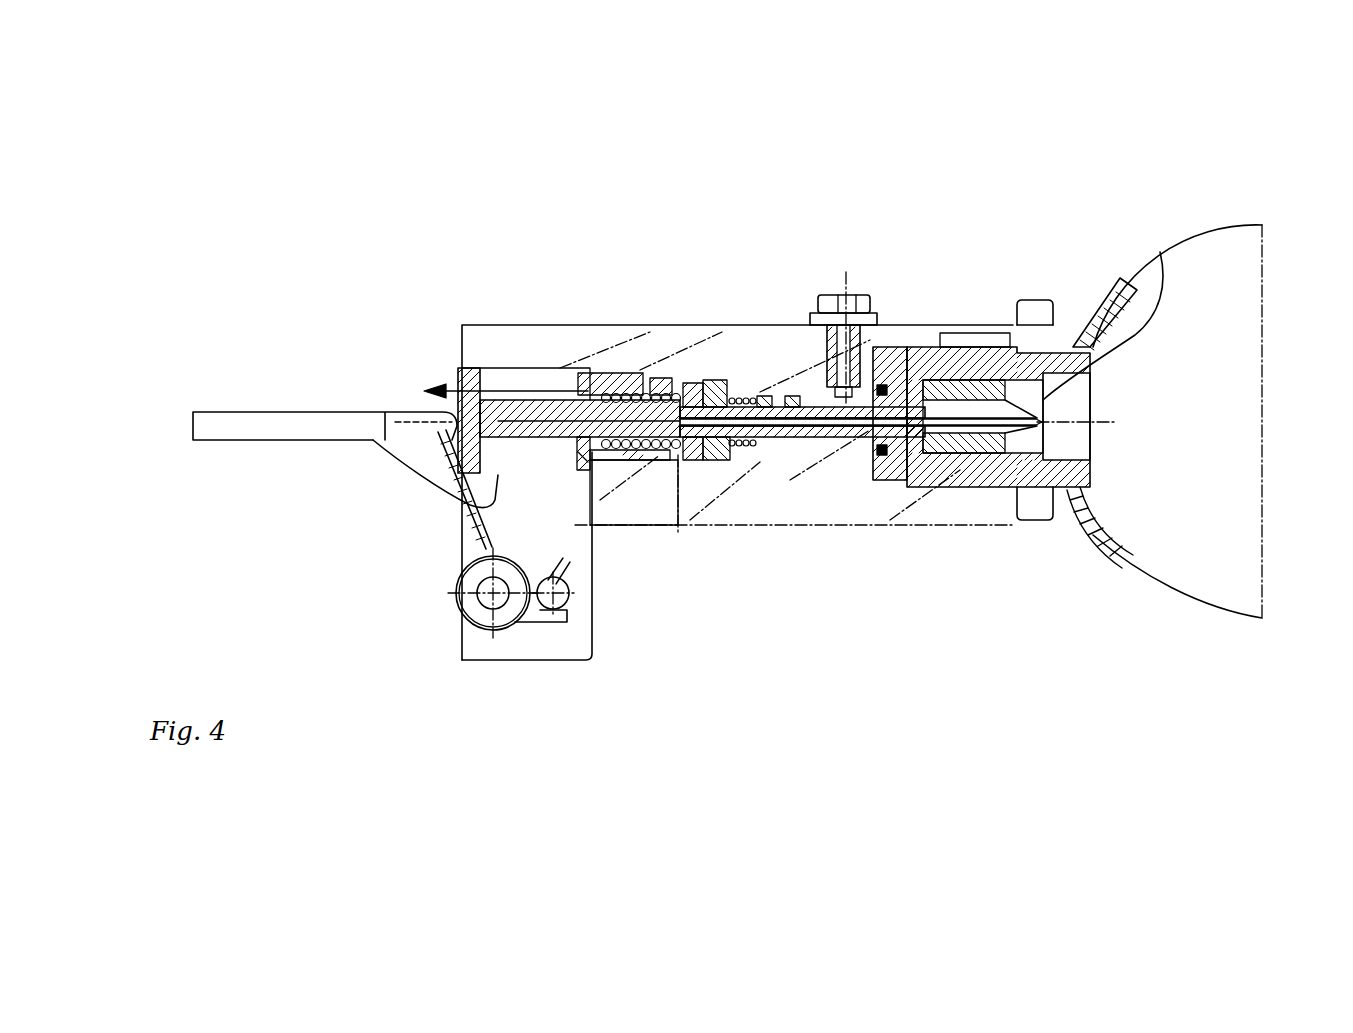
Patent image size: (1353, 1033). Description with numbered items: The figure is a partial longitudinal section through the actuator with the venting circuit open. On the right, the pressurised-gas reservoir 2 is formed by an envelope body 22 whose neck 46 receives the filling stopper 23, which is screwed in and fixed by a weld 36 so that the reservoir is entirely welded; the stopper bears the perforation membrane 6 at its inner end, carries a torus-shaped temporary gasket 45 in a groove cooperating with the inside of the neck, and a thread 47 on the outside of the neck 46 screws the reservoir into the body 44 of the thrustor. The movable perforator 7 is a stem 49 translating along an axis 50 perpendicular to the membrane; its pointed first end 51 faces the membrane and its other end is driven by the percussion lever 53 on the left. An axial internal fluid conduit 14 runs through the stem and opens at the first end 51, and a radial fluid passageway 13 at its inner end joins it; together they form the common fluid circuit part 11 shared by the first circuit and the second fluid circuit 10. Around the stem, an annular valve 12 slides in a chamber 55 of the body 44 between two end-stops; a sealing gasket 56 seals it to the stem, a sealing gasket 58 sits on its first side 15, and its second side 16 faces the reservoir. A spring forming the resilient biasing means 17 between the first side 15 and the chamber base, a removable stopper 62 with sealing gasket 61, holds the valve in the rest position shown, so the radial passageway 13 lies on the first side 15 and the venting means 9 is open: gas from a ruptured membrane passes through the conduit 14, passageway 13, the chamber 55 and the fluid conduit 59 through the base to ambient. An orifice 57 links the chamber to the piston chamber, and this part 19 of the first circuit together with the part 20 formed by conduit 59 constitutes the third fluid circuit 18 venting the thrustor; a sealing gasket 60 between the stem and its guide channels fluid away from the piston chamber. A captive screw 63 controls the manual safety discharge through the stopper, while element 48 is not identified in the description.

The pressurised-gas reservoir 2 is at (1212, 232).
The perforation membrane 6 is at (1160, 252).
The movable perforator 7 is at (903, 467).
The venting means 9 is at (652, 393).
The second fluid circuit 10 is at (507, 392).
The common fluid circuit part 11 is at (815, 332).
The valve 12 is at (720, 393).
The radial fluid passageway 13 is at (663, 393).
The axial internal fluid conduit 14 is at (850, 452).
The first side of the valve 15 is at (680, 462).
The second side of the valve 16 is at (740, 455).
The resilient biasing means 17 is at (606, 393).
The third fluid circuit 18 is at (450, 387).
The part of the first fluid circuit 19 is at (660, 470).
The part of the second fluid circuit 20 is at (542, 392).
The envelope body 22 is at (1110, 520).
The filling stopper 23 is at (950, 475).
The weld 36 is at (880, 355).
The body of the thrustor 44 is at (1005, 500).
The temporary gasket 45 is at (1035, 375).
The neck 46 is at (1010, 380).
The thread 47 is at (985, 345).
The lower tab 48 is at (975, 500).
The stem 49 is at (497, 452).
The axis 50 is at (417, 470).
The first end of the stem 51 is at (1045, 430).
The percussion lever 53 is at (250, 422).
The chamber 55 is at (662, 393).
The sealing gasket 56 is at (765, 390).
The orifice 57 is at (685, 522).
The sealing gasket 58 is at (705, 460).
The fluid conduit 59 is at (593, 375).
The sealing gasket 60 is at (795, 390).
The sealing gasket 61 is at (603, 465).
The removable stopper 62 is at (560, 470).
The captive screw 63 is at (862, 292).